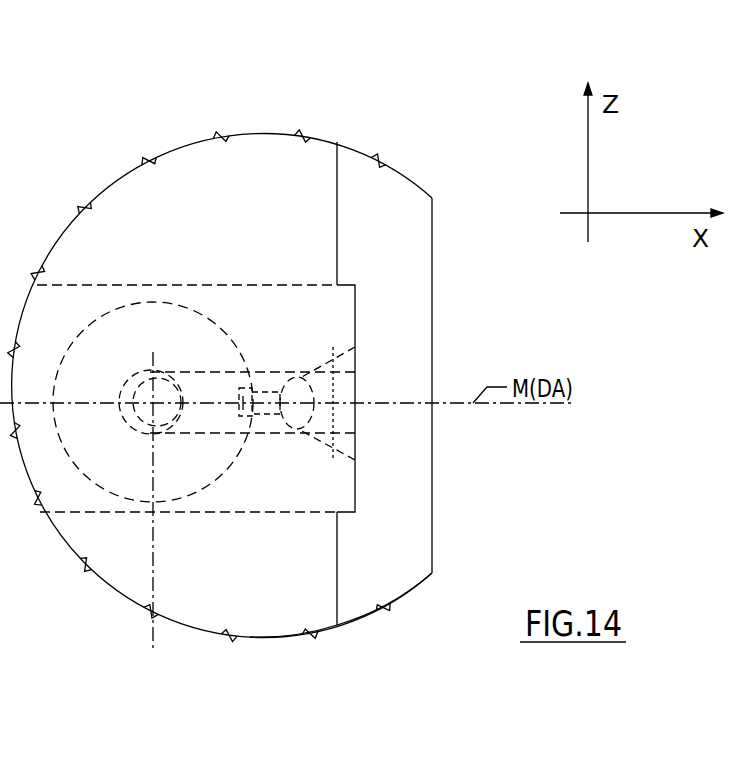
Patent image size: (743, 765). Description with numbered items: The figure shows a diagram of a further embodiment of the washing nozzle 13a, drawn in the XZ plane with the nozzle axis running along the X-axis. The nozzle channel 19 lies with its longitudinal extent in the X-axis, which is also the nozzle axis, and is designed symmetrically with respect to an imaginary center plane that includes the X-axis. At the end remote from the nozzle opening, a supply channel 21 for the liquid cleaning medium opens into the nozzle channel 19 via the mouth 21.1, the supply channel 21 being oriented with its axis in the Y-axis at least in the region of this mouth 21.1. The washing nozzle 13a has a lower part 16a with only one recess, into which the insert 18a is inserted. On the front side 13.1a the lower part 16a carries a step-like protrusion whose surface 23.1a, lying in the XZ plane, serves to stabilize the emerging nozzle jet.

The washing nozzle 13a is at (375, 128).
The front side 13.1a is at (447, 368).
The insert 18a is at (357, 310).
The surface 23.1a is at (412, 473).
The supply channel 21 is at (220, 462).
The mouth 21.1 is at (164, 384).
The nozzle channel 19 is at (202, 438).
The lower part 16a is at (290, 608).